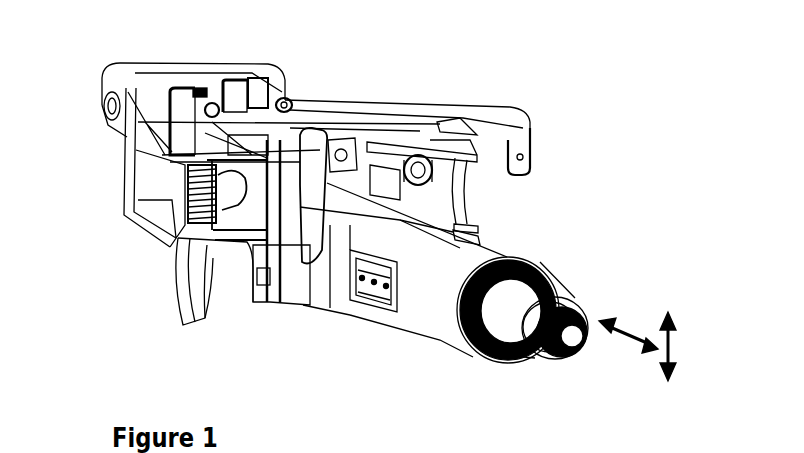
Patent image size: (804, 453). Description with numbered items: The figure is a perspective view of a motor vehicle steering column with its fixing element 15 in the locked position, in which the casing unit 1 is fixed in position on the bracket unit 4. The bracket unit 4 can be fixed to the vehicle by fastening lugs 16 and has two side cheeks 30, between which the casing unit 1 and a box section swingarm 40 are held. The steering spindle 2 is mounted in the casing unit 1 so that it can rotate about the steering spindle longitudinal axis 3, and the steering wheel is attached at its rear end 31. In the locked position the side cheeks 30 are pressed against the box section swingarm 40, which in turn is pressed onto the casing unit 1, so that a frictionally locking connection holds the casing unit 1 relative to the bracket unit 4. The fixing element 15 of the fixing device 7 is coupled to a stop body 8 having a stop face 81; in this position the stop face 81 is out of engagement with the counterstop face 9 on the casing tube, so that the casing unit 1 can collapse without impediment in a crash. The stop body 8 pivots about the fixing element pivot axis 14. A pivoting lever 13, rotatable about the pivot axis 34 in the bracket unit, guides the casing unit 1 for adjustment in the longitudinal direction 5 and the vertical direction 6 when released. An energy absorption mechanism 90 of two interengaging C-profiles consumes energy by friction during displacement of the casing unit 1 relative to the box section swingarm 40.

The casing unit 1 is at (441, 315).
The steering spindle 2 is at (512, 330).
The steering spindle longitudinal axis 3 is at (606, 350).
The bracket unit 4 is at (441, 104).
The longitudinal adjustment direction 5 is at (628, 342).
The vertical adjustment direction 6 is at (655, 350).
The fixing device 7 is at (187, 202).
The stop body 8 is at (372, 282).
The counterstop face 9 is at (455, 252).
The pivoting lever 13 is at (223, 242).
The fixing element pivot axis 14 is at (120, 203).
The fixing element 15 is at (450, 305).
The fastening lugs 16 is at (242, 62).
The side cheeks 30 is at (443, 203).
The rear end 31 is at (556, 322).
The pivot axis 34 is at (67, 108).
The box section swingarm 40 is at (323, 283).
The stop face 81 is at (403, 287).
The energy absorption mechanism 90 is at (349, 317).